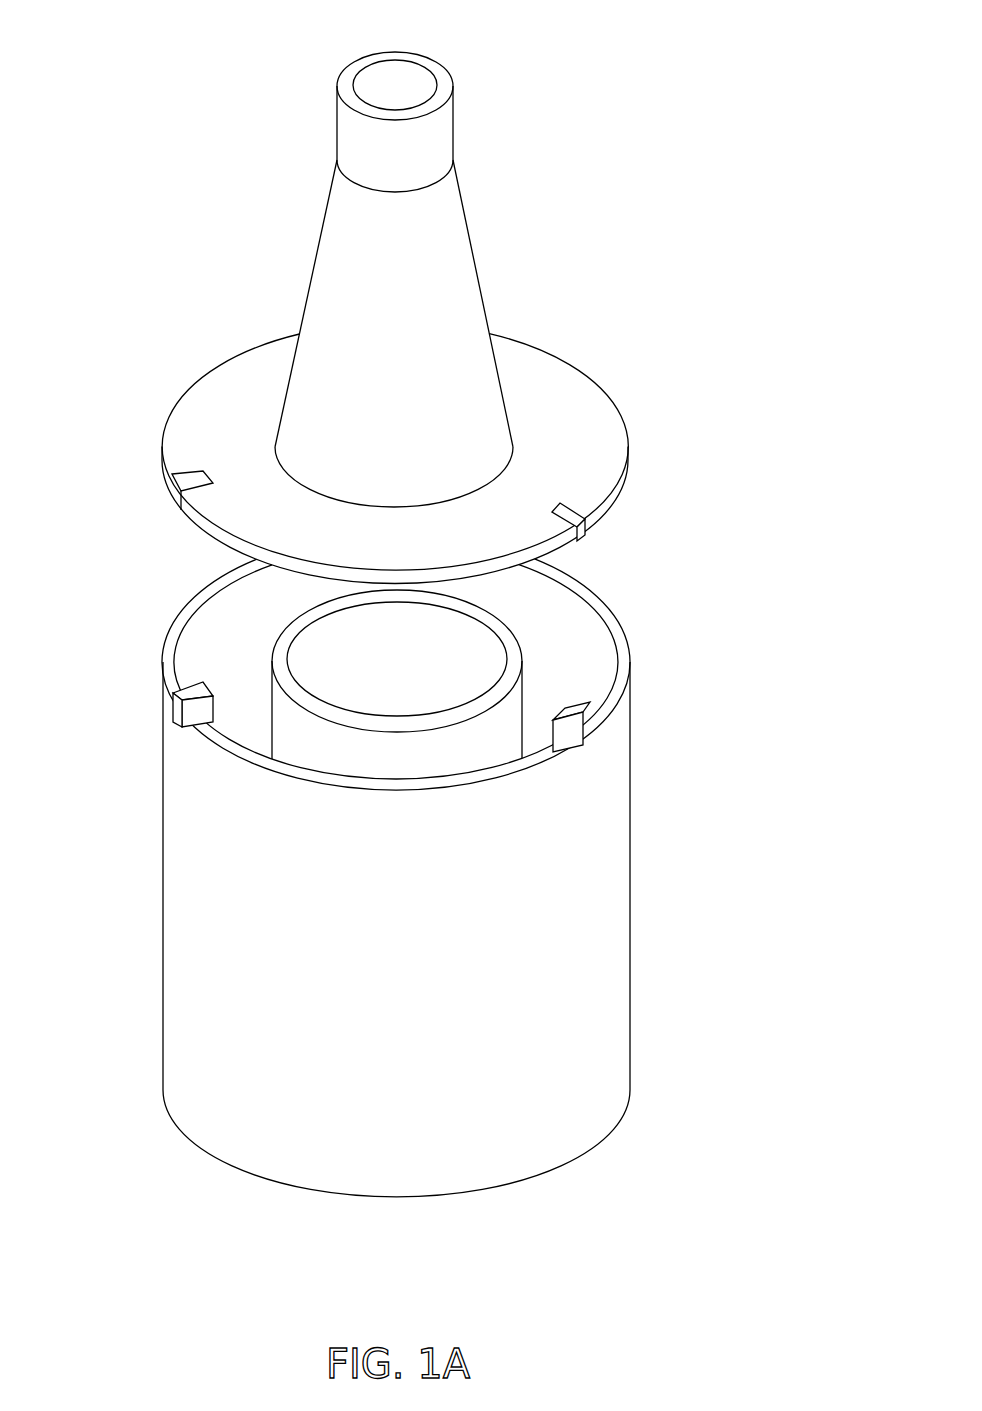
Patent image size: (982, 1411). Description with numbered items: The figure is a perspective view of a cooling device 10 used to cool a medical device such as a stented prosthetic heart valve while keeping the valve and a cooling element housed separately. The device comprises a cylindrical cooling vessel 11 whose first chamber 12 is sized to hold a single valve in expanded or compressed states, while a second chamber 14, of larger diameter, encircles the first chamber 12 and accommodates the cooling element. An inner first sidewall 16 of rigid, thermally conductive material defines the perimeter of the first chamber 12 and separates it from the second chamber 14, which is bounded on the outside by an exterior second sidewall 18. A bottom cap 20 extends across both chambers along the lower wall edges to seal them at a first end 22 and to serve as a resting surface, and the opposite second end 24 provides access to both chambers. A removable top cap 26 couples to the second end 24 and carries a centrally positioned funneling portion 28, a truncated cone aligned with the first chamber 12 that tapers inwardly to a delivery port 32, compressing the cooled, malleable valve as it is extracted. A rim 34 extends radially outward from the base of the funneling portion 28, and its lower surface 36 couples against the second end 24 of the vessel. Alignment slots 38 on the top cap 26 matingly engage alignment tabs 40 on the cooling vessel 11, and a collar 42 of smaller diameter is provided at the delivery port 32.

The cooling device 10 is at (684, 164).
The cooling vessel 11 is at (716, 910).
The first chamber 12 is at (468, 650).
The second chamber 14 is at (562, 618).
The first sidewall 16 is at (292, 736).
The second sidewall 18 is at (608, 806).
The bottom cap 20 is at (551, 1167).
The first end 22 is at (252, 1178).
The second end 24 is at (178, 600).
The top cap 26 is at (495, 243).
The funneling portion 28 is at (312, 272).
The delivery port 32 is at (414, 78).
The rim 34 is at (203, 392).
The lower surface 36 is at (207, 540).
The alignment slots 38 is at (183, 490).
The alignment tabs 40 is at (180, 708).
The collar 42 is at (347, 143).